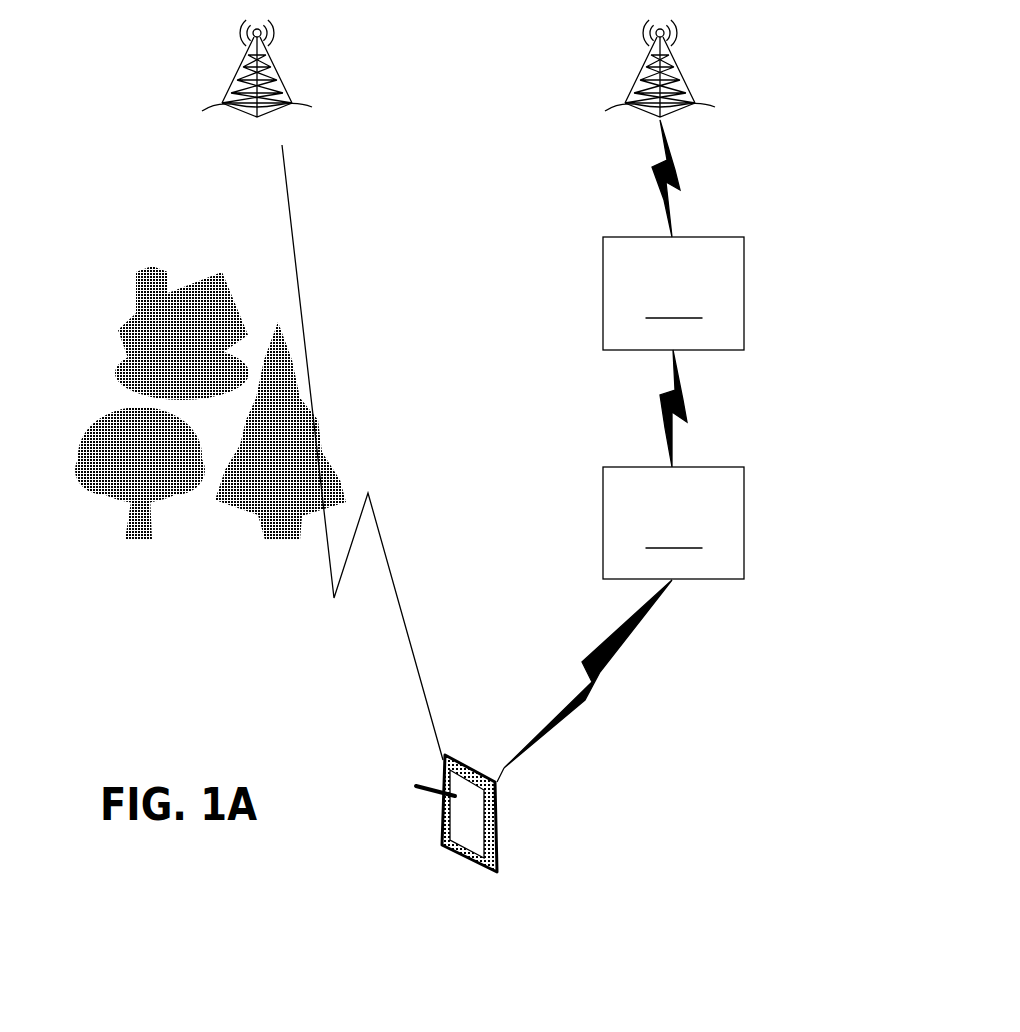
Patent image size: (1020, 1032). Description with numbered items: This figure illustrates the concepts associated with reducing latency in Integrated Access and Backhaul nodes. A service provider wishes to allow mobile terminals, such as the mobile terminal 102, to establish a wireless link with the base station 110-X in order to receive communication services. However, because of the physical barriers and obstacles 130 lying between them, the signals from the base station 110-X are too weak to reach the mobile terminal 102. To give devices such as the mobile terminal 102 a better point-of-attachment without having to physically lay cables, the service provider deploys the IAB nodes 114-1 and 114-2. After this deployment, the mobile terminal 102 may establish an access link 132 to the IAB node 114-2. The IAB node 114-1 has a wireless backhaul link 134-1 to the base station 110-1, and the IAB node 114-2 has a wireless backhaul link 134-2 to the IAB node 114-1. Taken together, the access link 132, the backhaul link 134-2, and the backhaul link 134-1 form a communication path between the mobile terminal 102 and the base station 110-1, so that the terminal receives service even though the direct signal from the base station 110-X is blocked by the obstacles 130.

The base station 110-X is at (212, 103).
The base station 110-1 is at (708, 104).
The physical barriers and obstacles 130 is at (120, 385).
The wireless backhaul link 134-1 is at (680, 191).
The IAB node 114-1 is at (673, 293).
The wireless backhaul link 134-2 is at (687, 408).
The IAB node 114-2 is at (673, 523).
The access link 132 is at (617, 665).
The mobile terminal 102 is at (497, 822).